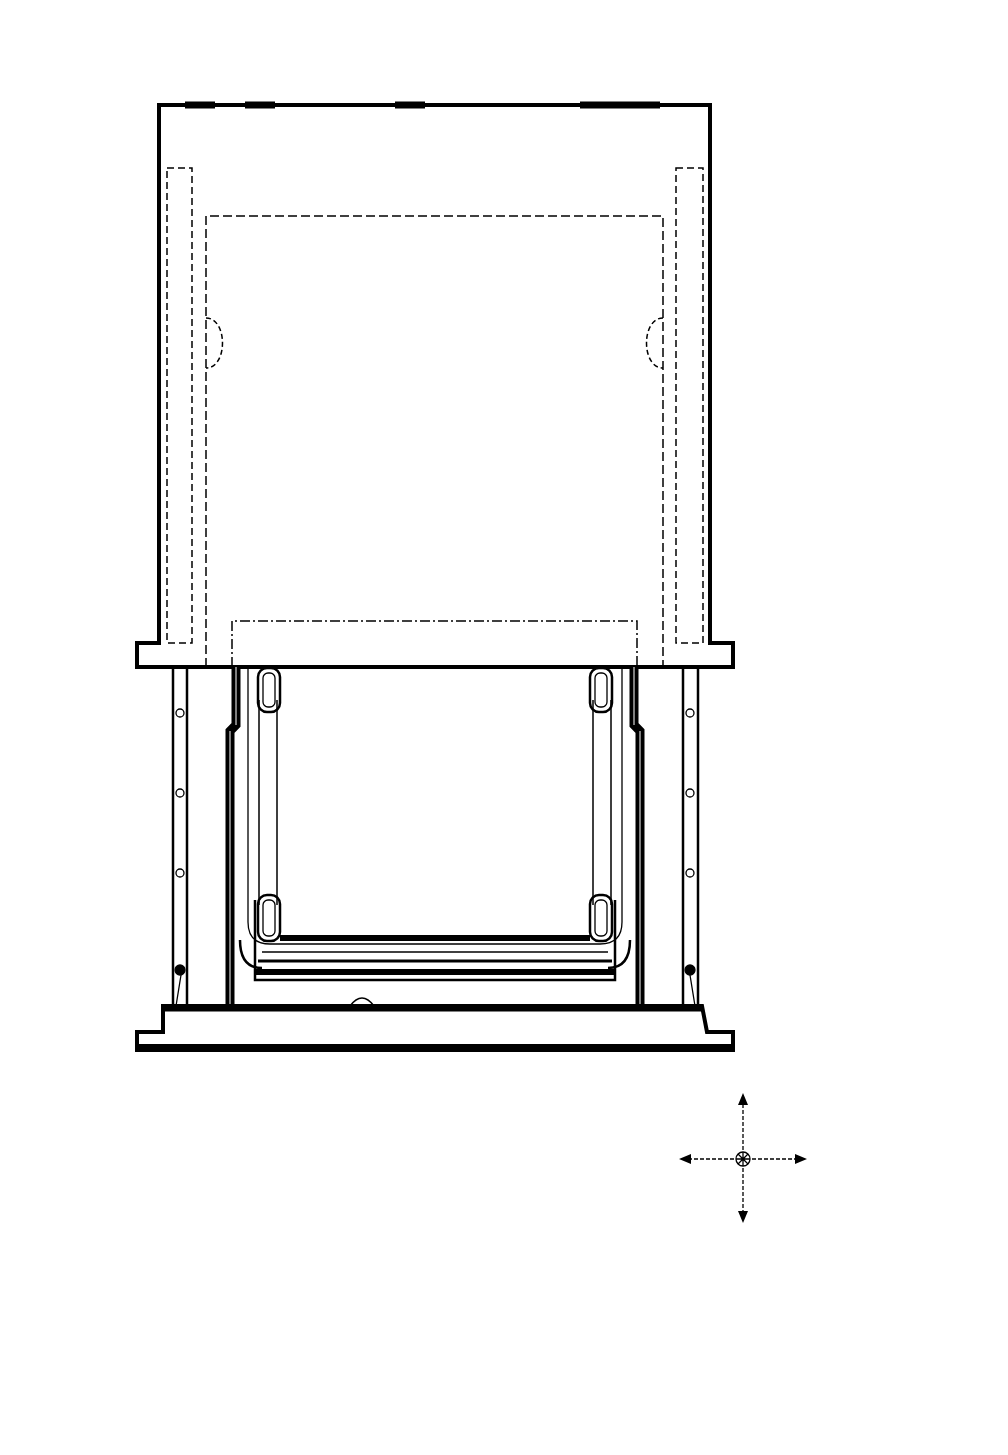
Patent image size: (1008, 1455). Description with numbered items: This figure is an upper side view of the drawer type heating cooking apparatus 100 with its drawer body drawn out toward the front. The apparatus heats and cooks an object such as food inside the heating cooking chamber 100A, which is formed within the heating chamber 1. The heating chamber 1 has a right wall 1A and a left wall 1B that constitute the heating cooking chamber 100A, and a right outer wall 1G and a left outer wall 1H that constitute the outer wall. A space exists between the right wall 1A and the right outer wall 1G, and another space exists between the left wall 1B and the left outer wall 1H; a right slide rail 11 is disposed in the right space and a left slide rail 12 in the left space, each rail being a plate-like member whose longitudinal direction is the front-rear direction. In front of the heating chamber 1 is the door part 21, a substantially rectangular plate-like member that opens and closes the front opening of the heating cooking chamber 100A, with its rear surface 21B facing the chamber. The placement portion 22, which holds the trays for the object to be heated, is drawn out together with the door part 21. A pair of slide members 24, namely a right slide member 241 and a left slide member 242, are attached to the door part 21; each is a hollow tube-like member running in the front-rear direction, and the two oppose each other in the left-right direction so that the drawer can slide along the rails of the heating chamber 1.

The drawer type heating cooking apparatus 100 is at (661, 74).
The heating cooking chamber 100A is at (414, 216).
The heating chamber 1 is at (627, 105).
The right wall 1A is at (663, 320).
The left wall 1B is at (206, 320).
The right outer wall 1G is at (711, 441).
The left outer wall 1H is at (158, 441).
The right slide rail 11 is at (706, 181).
The left slide rail 12 is at (160, 180).
The door part 21 is at (538, 1051).
The rear surface 21B is at (362, 1008).
The placement portion 22 is at (647, 850).
The slide member 24 is at (438, 836).
The right slide member 241 is at (700, 778).
The left slide member 242 is at (172, 778).